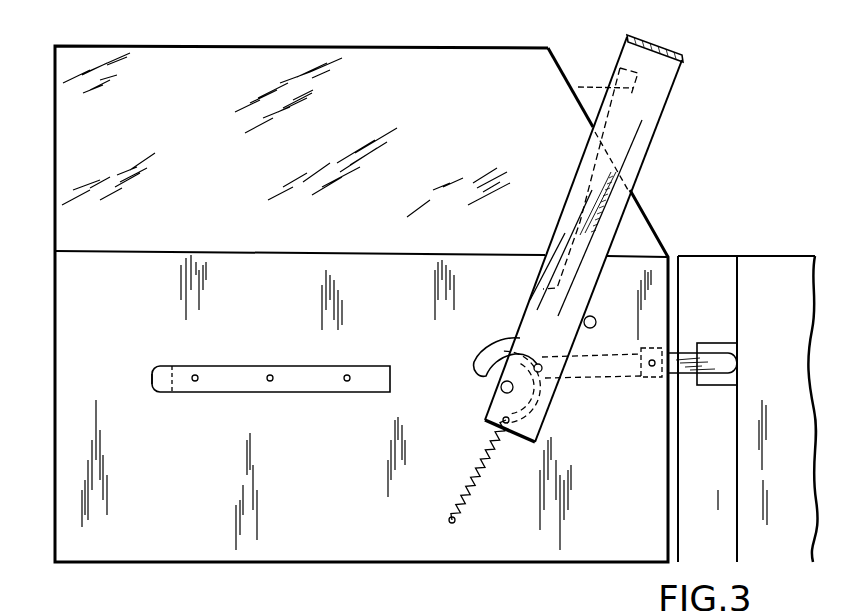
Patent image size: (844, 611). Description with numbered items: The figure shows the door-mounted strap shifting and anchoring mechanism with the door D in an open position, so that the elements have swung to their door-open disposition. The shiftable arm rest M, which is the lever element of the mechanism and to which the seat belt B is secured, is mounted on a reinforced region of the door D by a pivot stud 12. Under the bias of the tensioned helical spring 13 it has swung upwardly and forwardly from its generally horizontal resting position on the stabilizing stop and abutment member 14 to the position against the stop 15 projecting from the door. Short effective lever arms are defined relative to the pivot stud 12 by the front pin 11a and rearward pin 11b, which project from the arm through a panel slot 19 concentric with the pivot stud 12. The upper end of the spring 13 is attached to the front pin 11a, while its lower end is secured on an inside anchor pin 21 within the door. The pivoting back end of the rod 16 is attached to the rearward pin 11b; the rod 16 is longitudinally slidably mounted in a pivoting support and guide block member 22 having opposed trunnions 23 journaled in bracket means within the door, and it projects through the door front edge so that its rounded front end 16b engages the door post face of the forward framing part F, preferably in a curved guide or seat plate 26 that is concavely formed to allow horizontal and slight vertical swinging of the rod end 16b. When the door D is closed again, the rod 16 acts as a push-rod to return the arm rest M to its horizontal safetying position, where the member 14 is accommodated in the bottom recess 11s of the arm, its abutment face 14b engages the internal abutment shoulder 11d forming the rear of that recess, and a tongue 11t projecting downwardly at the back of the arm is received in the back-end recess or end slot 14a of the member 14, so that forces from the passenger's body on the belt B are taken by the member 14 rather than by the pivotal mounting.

The door D is at (52, 406).
The forward part of vehicle body door framing F is at (766, 256).
The shiftable arm rest M is at (660, 126).
The seat belt B is at (688, 57).
The front pin 11a is at (500, 418).
The rearward pin 11b is at (537, 357).
The internal abutment shoulder 11d is at (622, 68).
The bottom recess 11s is at (602, 168).
The tongue 11t is at (600, 85).
The pivot stud 12 is at (500, 390).
The tensioned helical spring 13 is at (480, 492).
The stabilizing stop and abutment member 14 is at (233, 392).
The bracket screw 14a is at (172, 366).
The abutment face 14b is at (150, 382).
The stop 15 is at (597, 322).
The rod 16 is at (593, 373).
The rounded front end of rod 16b is at (718, 368).
The panel slot 19 is at (476, 366).
The inside anchor pin 21 is at (449, 520).
The pivoting support and guide block member 22 is at (660, 345).
The trunnions 23 is at (652, 367).
The curved guide or seat plate 26 is at (724, 343).